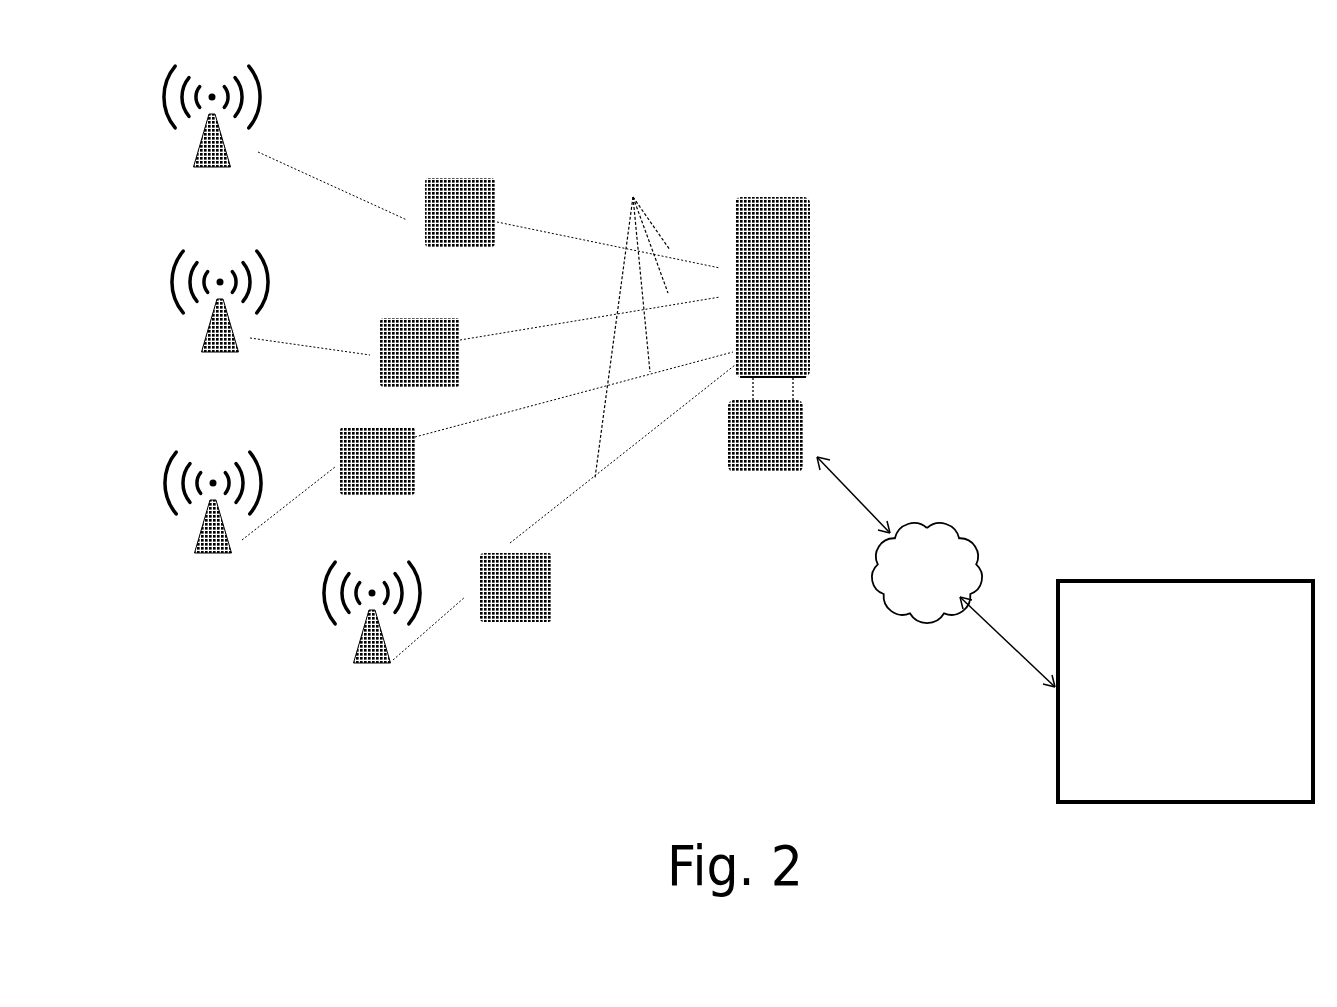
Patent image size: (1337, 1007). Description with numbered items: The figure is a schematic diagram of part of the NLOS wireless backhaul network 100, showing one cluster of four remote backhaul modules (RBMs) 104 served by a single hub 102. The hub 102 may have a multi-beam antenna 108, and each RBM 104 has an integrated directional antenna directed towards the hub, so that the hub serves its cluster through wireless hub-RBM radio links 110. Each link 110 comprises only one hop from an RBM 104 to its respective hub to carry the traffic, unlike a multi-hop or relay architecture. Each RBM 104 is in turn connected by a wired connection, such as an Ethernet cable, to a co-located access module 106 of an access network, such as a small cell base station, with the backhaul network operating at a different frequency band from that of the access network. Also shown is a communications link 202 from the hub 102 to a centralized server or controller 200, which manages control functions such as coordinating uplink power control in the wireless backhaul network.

The NLOS wireless backhaul network 100 is at (870, 105).
The hub 102 is at (808, 445).
The remote backhaul module (RBM) 104 is at (537, 373).
The access module (AM) 106 is at (291, 382).
The multi-beam antenna 108 is at (811, 298).
The hub-RBM radio links 110 is at (632, 318).
The centralized server or controller 200 is at (1185, 580).
The communications link 202 is at (885, 620).